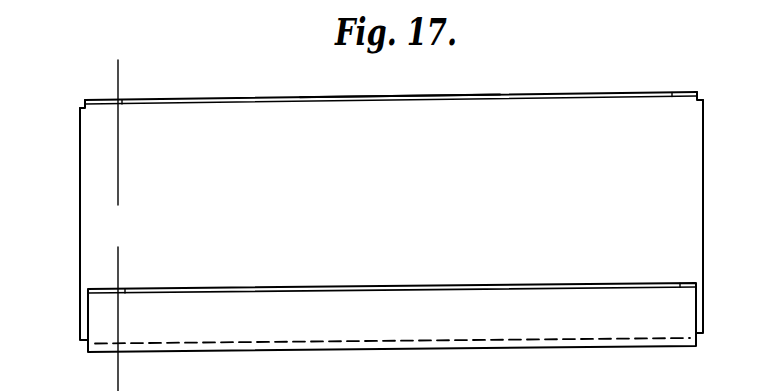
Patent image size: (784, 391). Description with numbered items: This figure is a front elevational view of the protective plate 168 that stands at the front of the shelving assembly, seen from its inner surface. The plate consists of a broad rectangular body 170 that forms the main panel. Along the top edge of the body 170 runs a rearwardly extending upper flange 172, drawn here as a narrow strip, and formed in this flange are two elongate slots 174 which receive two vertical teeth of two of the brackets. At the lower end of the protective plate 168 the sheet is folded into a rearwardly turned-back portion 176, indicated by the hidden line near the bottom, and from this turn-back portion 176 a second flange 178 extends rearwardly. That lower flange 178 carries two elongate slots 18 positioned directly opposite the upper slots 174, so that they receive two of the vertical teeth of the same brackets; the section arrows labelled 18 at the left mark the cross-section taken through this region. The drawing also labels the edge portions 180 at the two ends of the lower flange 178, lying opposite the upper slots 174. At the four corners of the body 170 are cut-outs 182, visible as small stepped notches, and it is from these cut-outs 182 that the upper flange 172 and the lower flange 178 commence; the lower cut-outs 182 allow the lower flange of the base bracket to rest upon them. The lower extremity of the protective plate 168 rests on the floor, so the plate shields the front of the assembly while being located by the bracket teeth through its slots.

The section line 18 is at (92, 380).
The protective plate 168 is at (613, 92).
The body 170 is at (391, 220).
The upper flange 172 is at (541, 95).
The elongate slots 174 is at (122, 99).
The turn-back portion 176 is at (398, 327).
The flange 178 is at (410, 259).
The flange end edges 180 is at (125, 289).
The cut-outs 182 is at (83, 107).